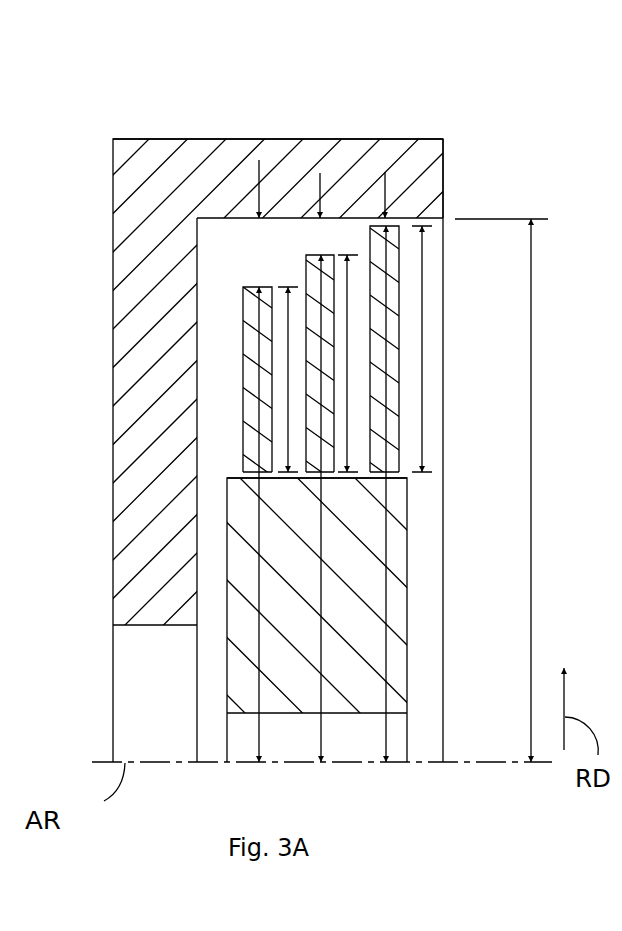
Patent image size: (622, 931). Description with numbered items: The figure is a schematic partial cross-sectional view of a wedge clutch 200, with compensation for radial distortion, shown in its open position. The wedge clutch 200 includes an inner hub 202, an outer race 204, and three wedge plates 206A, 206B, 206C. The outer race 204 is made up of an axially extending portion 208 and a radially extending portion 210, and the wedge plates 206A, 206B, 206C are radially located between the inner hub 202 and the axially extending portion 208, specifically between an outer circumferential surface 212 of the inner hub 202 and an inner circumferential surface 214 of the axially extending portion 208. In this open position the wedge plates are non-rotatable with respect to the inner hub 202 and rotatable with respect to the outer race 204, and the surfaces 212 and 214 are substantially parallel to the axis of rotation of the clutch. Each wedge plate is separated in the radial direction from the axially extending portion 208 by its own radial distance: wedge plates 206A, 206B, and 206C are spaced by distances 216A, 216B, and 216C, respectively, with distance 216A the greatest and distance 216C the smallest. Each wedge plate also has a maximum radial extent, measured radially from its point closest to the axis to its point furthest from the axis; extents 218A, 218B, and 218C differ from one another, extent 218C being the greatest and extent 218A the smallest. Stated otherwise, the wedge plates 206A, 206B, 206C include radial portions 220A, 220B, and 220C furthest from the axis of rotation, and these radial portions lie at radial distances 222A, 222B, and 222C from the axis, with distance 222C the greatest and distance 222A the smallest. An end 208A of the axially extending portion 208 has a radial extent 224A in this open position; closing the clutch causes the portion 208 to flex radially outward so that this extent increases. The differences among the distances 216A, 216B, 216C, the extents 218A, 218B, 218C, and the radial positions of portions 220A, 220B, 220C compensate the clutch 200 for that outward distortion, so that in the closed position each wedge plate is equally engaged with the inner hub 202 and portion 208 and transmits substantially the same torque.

The wedge clutch 200 is at (82, 188).
The inner hub 202 is at (409, 663).
The outer race 204 is at (167, 136).
The axially extending portion 208 is at (158, 183).
The end 208A is at (443, 157).
The radially extending portion 210 is at (133, 362).
The outer circumferential surface 212 is at (358, 476).
The inner circumferential surface 214 is at (215, 228).
The wedge plate 206A is at (254, 284).
The wedge plate 206B is at (331, 252).
The wedge plate 206C is at (401, 222).
The radial distance 216A is at (260, 165).
The radial distance 216B is at (321, 176).
The radial distance 216C is at (386, 186).
The maximum radial extent 218A is at (289, 428).
The maximum radial extent 218B is at (350, 390).
The maximum radial extent 218C is at (423, 436).
The radial portion 220A is at (258, 299).
The radial portion 220B is at (320, 253).
The radial portion 220C is at (398, 224).
The radial distance 222A is at (258, 564).
The radial distance 222B is at (320, 634).
The radial distance 222C is at (385, 738).
The radial extent 224A is at (533, 560).